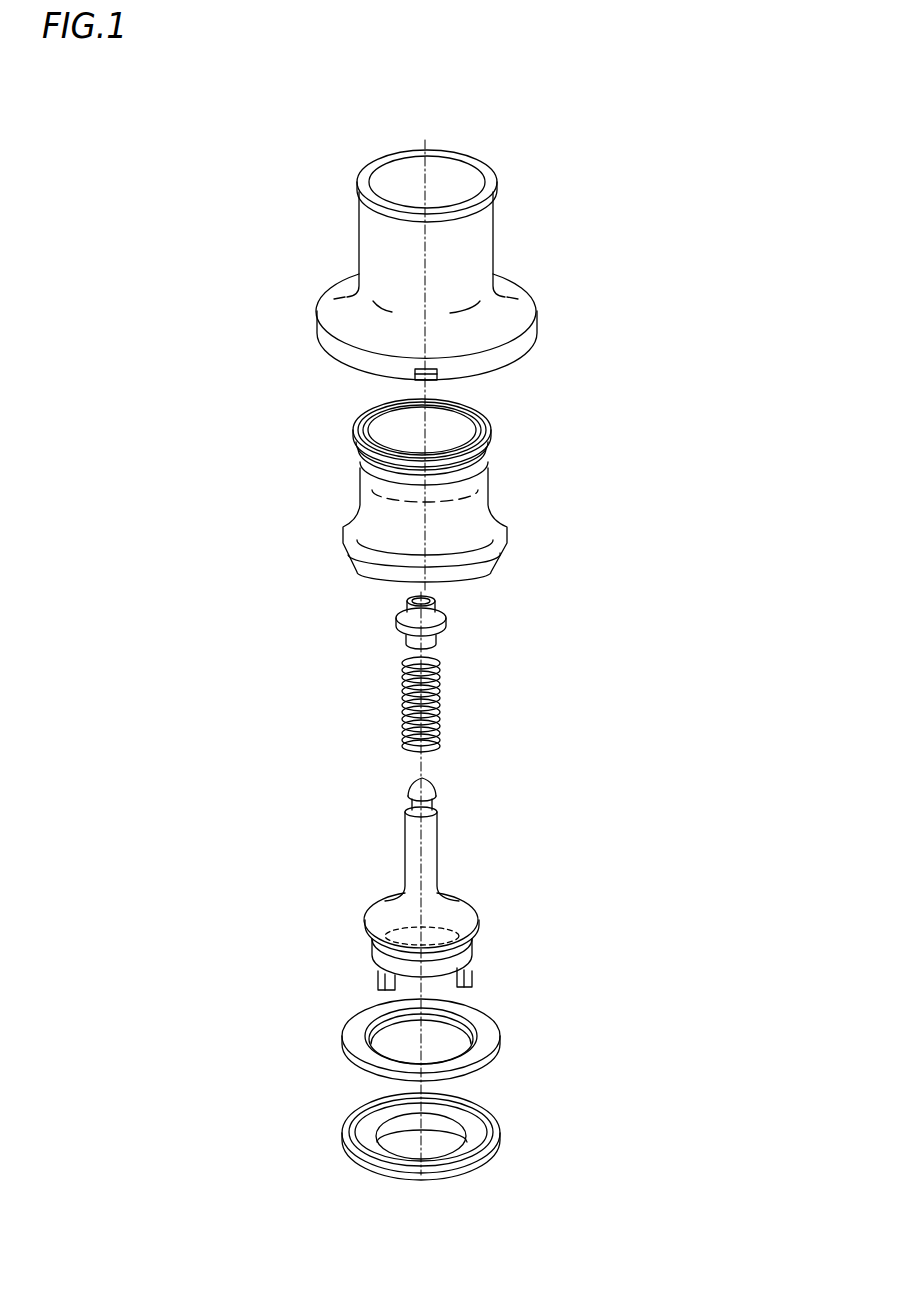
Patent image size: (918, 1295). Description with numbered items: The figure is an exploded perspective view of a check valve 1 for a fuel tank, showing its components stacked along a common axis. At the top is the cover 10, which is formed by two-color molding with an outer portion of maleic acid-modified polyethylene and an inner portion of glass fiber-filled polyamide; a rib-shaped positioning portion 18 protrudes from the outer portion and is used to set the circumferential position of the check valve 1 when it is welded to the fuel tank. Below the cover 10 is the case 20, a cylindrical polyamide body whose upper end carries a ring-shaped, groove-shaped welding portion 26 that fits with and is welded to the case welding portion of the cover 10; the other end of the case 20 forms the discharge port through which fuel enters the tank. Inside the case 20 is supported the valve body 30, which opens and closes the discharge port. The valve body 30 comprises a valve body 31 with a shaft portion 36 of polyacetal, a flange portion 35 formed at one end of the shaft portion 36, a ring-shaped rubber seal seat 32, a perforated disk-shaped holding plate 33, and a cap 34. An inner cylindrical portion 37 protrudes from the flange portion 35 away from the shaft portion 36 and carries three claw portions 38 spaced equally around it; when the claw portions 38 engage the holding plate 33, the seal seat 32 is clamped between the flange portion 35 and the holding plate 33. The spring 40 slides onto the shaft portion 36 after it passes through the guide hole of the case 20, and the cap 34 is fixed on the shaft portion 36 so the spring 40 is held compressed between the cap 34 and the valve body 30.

The check valve 1 is at (277, 163).
The cover 10 is at (370, 237).
The positioning portion 18 is at (437, 373).
The case 20 is at (370, 510).
The welding portion 26 is at (490, 423).
The valve body 30 is at (490, 905).
The valve body 31 is at (462, 908).
The seal seat 32 is at (490, 1040).
The holding plate 33 is at (493, 1133).
The cap 34 is at (447, 615).
The flange portion 35 is at (372, 925).
The shaft portion 36 is at (415, 847).
The inner cylindrical portion 37 is at (433, 967).
The claw portions 38 is at (383, 978).
The spring 40 is at (440, 693).